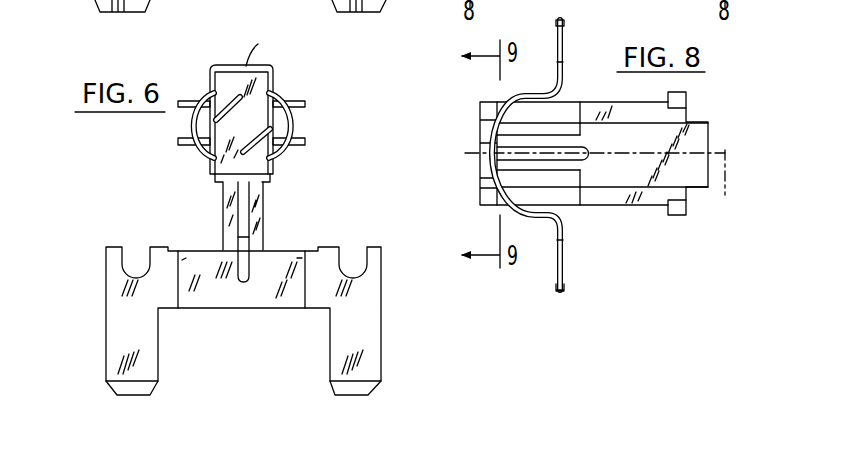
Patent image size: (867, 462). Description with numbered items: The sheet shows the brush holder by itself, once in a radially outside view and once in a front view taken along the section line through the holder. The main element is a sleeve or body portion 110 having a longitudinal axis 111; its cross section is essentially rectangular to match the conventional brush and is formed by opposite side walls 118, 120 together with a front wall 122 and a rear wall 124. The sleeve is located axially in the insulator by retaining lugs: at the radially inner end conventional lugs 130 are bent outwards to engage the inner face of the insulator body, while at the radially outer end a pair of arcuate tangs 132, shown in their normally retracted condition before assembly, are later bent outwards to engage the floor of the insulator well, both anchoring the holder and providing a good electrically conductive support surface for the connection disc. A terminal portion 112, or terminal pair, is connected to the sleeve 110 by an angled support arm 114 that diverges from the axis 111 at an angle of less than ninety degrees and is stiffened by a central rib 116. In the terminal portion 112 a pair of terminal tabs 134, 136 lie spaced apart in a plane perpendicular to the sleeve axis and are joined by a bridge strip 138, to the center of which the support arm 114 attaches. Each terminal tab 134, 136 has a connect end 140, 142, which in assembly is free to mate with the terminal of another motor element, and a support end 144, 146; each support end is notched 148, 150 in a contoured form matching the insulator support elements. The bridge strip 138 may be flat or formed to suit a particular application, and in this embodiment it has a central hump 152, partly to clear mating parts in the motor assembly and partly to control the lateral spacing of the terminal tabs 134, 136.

In FIG. 6, the sleeve or body portion 110 is at (248, 133).
In FIG. 8, the sleeve or body portion 110 is at (580, 173).
In FIG. 8, the longitudinal axis 111 is at (720, 216).
In FIG. 6, the terminal portion 112 is at (252, 317).
In FIG. 8, the terminal portion 112 is at (535, 179).
In FIG. 6, the support arm 114 is at (224, 214).
In FIG. 8, the support arm 114 is at (560, 132).
In FIG. 6, the central rib 116 is at (238, 204).
In FIG. 8, the central rib 116 is at (588, 162).
In FIG. 6, the side wall 118 is at (275, 74).
In FIG. 8, the side wall 118 is at (602, 153).
In FIG. 6, the side wall 120 is at (212, 82).
In FIG. 6, the front wall 122 is at (268, 183).
In FIG. 6, the rear wall 124 is at (246, 66).
In FIG. 6, the lugs 130 is at (178, 142).
In FIG. 8, the lugs 130 is at (686, 94).
In FIG. 6, the arcuate tangs 132 is at (258, 150).
In FIG. 8, the arcuate tangs 132 is at (480, 112).
In FIG. 6, the terminal tab 134 is at (398, 323).
In FIG. 8, the terminal tab 134 is at (564, 56).
In FIG. 6, the terminal tab 136 is at (100, 325).
In FIG. 8, the terminal tab 136 is at (563, 289).
In FIG. 6, the bridge strip 138 is at (208, 310).
In FIG. 8, the bridge strip 138 is at (548, 90).
In FIG. 6, the connect end 140 is at (382, 373).
In FIG. 6, the connect end 142 is at (106, 355).
In FIG. 6, the support end 144 is at (382, 285).
In FIG. 6, the support end 146 is at (106, 273).
In FIG. 6, the notch 148 is at (352, 258).
In FIG. 6, the notch 150 is at (133, 260).
In FIG. 6, the central hump 152 is at (289, 333).
In FIG. 8, the central hump 152 is at (515, 100).